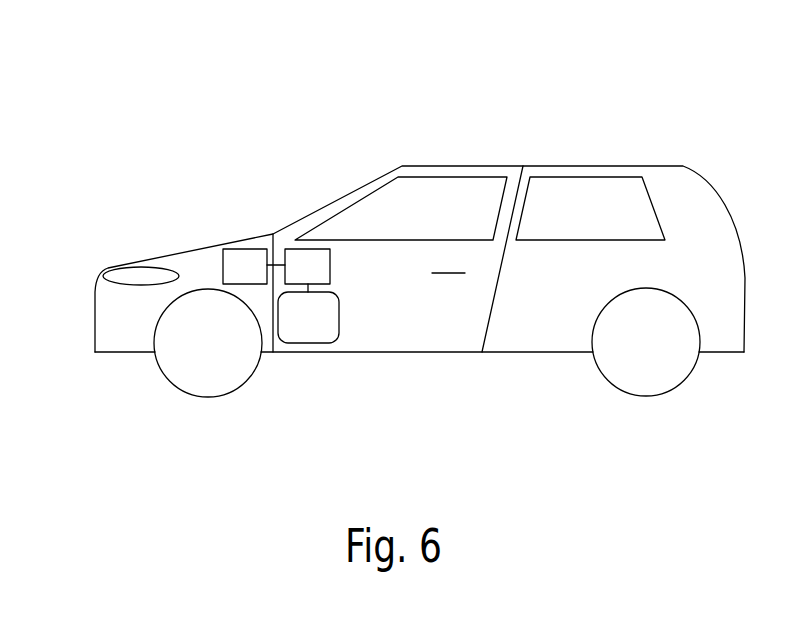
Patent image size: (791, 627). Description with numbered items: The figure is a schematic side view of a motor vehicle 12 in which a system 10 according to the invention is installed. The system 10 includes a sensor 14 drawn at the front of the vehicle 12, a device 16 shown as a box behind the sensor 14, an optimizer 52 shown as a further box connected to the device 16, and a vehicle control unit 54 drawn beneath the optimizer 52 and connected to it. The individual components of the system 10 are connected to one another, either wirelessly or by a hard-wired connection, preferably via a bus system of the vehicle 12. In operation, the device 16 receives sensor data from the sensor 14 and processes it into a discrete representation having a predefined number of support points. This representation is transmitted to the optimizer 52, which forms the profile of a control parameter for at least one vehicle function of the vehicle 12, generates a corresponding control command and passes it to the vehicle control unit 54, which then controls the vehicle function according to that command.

The system 10 is at (175, 108).
The motor vehicle 12 is at (577, 167).
The sensor 14 is at (162, 265).
The device 16 is at (243, 249).
The optimizer 52 is at (300, 249).
The vehicle control unit 54 is at (339, 318).